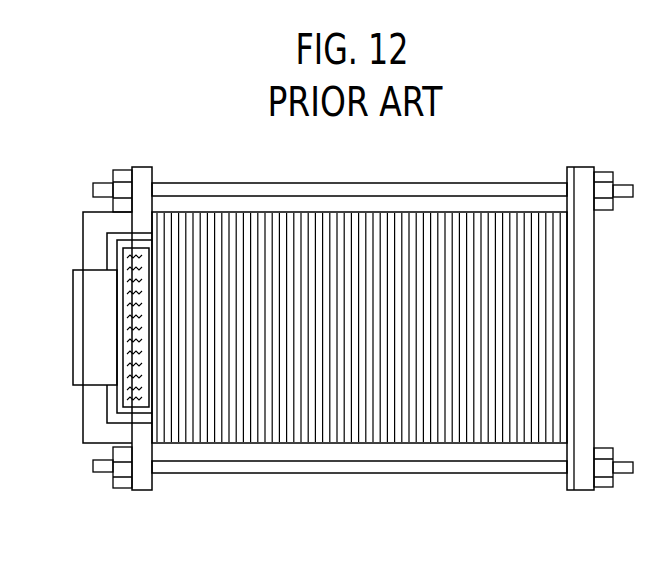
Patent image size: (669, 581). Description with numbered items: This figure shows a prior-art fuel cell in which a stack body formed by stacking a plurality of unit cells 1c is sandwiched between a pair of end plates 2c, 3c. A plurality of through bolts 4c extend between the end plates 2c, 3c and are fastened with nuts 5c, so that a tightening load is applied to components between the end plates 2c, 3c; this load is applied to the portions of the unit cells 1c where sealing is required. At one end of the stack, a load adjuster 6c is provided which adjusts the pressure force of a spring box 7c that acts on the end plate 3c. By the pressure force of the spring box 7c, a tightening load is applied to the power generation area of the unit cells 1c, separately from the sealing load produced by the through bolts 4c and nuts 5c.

The unit cells 1c is at (247, 444).
The end plate 2c is at (580, 180).
The end plate 3c is at (142, 477).
The through bolts 4c is at (348, 193).
The nuts 5c is at (131, 170).
The load adjuster 6c is at (93, 347).
The spring box 7c is at (115, 402).